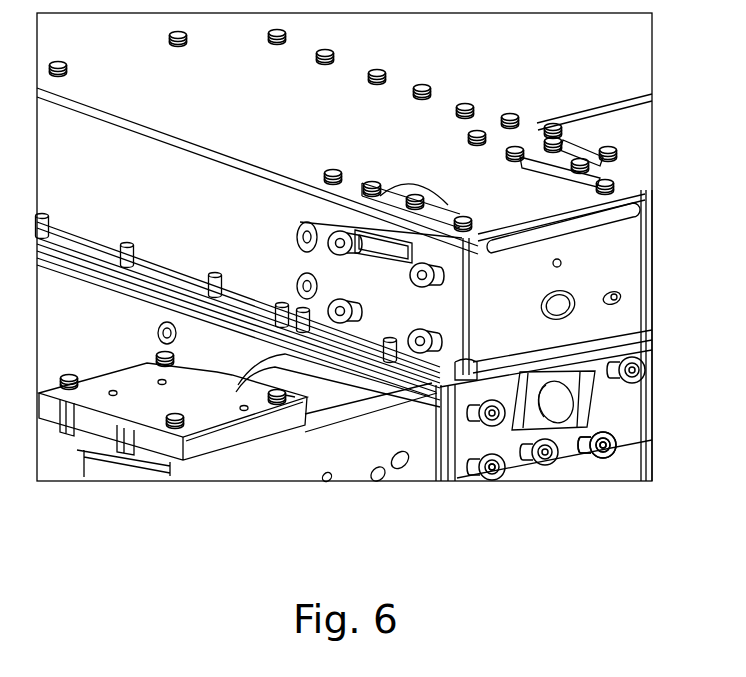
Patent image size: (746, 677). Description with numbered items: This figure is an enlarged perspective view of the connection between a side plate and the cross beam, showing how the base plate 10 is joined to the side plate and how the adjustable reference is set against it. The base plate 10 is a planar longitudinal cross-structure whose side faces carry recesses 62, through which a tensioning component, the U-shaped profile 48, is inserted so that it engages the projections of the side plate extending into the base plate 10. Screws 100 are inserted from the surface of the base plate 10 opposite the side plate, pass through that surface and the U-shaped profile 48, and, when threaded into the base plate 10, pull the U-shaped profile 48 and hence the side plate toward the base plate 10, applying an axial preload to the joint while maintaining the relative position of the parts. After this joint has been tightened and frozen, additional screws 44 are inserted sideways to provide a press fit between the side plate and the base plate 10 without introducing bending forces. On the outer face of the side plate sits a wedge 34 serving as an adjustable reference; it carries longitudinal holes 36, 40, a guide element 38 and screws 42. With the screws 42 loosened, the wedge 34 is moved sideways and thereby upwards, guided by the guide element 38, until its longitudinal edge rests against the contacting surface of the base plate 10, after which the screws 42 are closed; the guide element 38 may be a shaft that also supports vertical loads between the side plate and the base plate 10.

The base plate 10 is at (270, 113).
The screws 100 is at (392, 186).
The recesses 62 is at (297, 225).
The U-shaped profile 48 is at (386, 258).
The additional screws 44 is at (433, 284).
The longitudinal holes 36 is at (583, 400).
The wedges 34 is at (520, 468).
The guide element 38 is at (567, 428).
The longitudinal holes 40 is at (470, 478).
The screws 42 is at (493, 480).